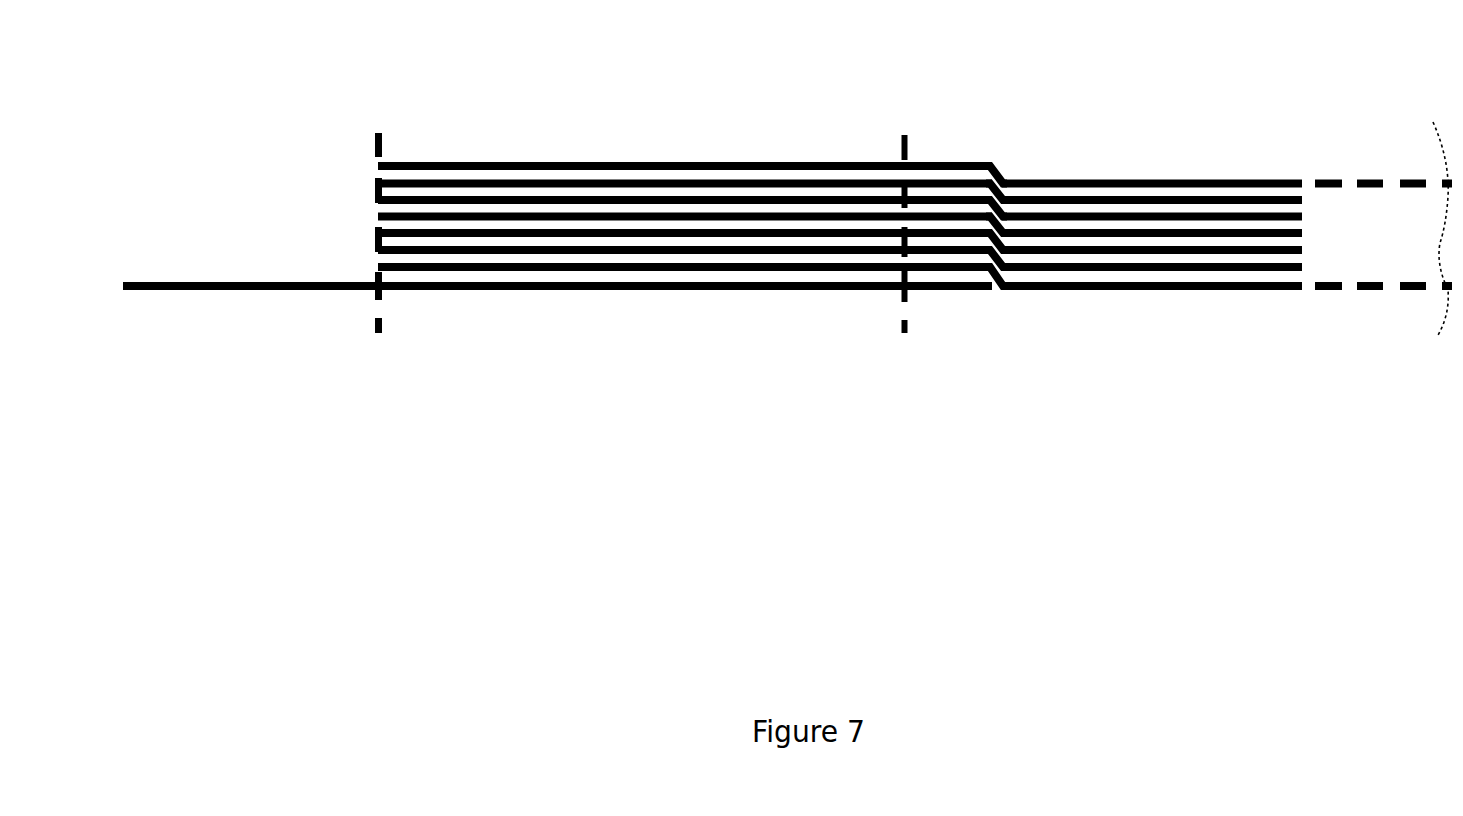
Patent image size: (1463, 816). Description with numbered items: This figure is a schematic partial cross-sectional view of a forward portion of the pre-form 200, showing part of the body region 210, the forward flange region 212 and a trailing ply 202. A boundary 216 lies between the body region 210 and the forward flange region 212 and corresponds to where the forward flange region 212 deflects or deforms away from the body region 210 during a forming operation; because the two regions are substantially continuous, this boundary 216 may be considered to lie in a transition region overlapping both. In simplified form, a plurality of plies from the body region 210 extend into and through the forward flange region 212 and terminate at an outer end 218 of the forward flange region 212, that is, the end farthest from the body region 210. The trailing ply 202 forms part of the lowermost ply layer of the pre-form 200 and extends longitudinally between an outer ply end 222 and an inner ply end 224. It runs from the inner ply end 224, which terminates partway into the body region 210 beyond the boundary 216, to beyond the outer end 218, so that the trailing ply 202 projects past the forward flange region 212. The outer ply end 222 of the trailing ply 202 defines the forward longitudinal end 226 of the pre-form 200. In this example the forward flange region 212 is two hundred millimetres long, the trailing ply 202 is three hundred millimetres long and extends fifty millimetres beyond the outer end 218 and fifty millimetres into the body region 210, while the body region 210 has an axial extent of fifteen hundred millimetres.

The pre-form 200 is at (705, 67).
The trailing ply 202 is at (280, 292).
The body region 210 is at (1157, 248).
The forward flange region 212 is at (653, 240).
The boundary 216 is at (902, 135).
The outer end 218 is at (383, 147).
The outer ply end 222 is at (122, 288).
The inner ply end 224 is at (995, 297).
The forward longitudinal end 226 is at (108, 332).